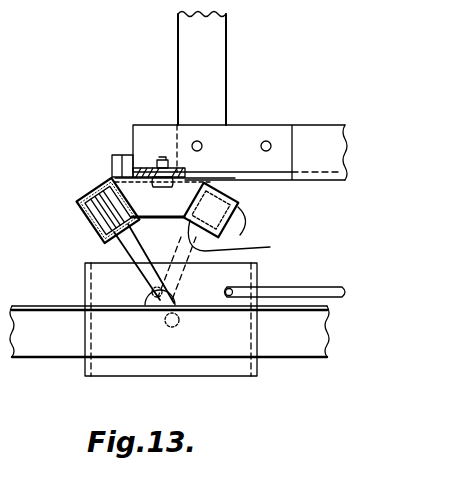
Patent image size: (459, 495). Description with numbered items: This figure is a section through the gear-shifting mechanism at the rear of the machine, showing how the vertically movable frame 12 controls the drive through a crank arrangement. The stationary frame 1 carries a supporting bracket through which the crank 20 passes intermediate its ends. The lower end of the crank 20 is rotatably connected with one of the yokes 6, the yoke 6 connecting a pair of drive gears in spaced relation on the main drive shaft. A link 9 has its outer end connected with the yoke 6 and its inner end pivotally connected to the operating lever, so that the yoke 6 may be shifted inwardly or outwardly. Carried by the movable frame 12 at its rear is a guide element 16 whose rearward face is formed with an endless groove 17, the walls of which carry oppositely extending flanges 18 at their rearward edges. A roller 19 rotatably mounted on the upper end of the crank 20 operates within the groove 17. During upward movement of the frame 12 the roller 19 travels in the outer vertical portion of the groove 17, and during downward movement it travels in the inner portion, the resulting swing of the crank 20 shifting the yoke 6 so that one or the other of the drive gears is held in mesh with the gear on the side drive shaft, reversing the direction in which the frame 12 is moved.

The stationary frame 1 is at (50, 336).
The yoke 6 is at (232, 373).
The link 9 is at (300, 293).
The vertically movable frame 12 is at (309, 142).
The guide element 16 is at (157, 198).
The endless groove 17 is at (238, 200).
The flange 18 is at (246, 233).
The roller 19 is at (98, 200).
The crank 20 is at (128, 247).